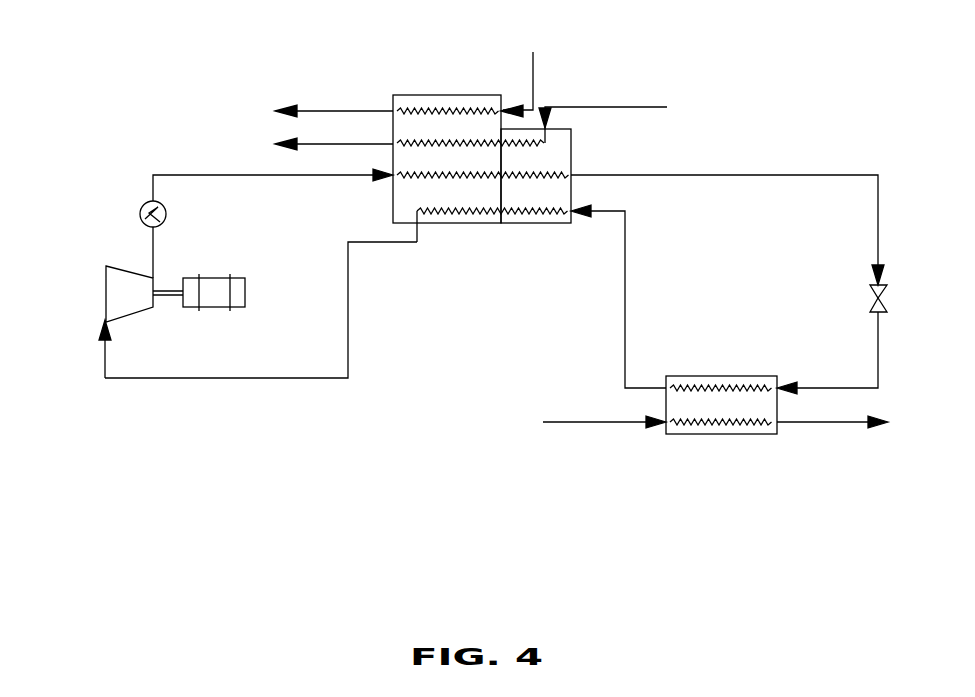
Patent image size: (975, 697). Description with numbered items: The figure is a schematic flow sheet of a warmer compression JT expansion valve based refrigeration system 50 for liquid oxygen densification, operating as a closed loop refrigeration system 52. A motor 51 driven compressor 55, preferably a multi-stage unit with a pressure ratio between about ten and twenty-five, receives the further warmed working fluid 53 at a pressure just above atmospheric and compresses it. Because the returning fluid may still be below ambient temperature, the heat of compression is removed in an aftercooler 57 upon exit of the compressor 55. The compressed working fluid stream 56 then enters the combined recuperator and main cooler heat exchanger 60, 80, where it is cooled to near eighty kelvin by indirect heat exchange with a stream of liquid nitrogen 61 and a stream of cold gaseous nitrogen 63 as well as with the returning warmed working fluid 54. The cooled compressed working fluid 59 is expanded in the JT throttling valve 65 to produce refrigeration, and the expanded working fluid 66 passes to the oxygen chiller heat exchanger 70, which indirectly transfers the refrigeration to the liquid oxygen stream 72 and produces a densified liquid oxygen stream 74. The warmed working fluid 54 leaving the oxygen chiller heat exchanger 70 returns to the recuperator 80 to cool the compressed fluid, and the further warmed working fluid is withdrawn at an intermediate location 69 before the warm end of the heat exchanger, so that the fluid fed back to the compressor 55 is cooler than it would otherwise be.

The warmer compression JT expansion valve based refrigeration system 50 is at (150, 93).
The motor 51 is at (245, 292).
The closed loop refrigeration system 52 is at (128, 425).
The further warmed working fluid 53 is at (217, 380).
The warmed working fluid 54 is at (625, 290).
The compressor 55 is at (125, 315).
The compressed working fluid stream 56 is at (210, 175).
The aftercooler 57 is at (143, 203).
The compressed working fluid 59 is at (770, 175).
The main cooler heat exchanger 60 is at (393, 95).
The stream of liquid nitrogen 61 is at (610, 108).
The stream of cold gaseous nitrogen 63 is at (533, 60).
The JT throttling valve 65 is at (884, 282).
The expanded working fluid 66 is at (878, 355).
The intermediate location 69 is at (420, 226).
The oxygen chiller heat exchanger 70 is at (762, 376).
The liquid oxygen stream 72 is at (620, 422).
The densified liquid oxygen stream 74 is at (805, 422).
The recuperator 80 is at (530, 223).